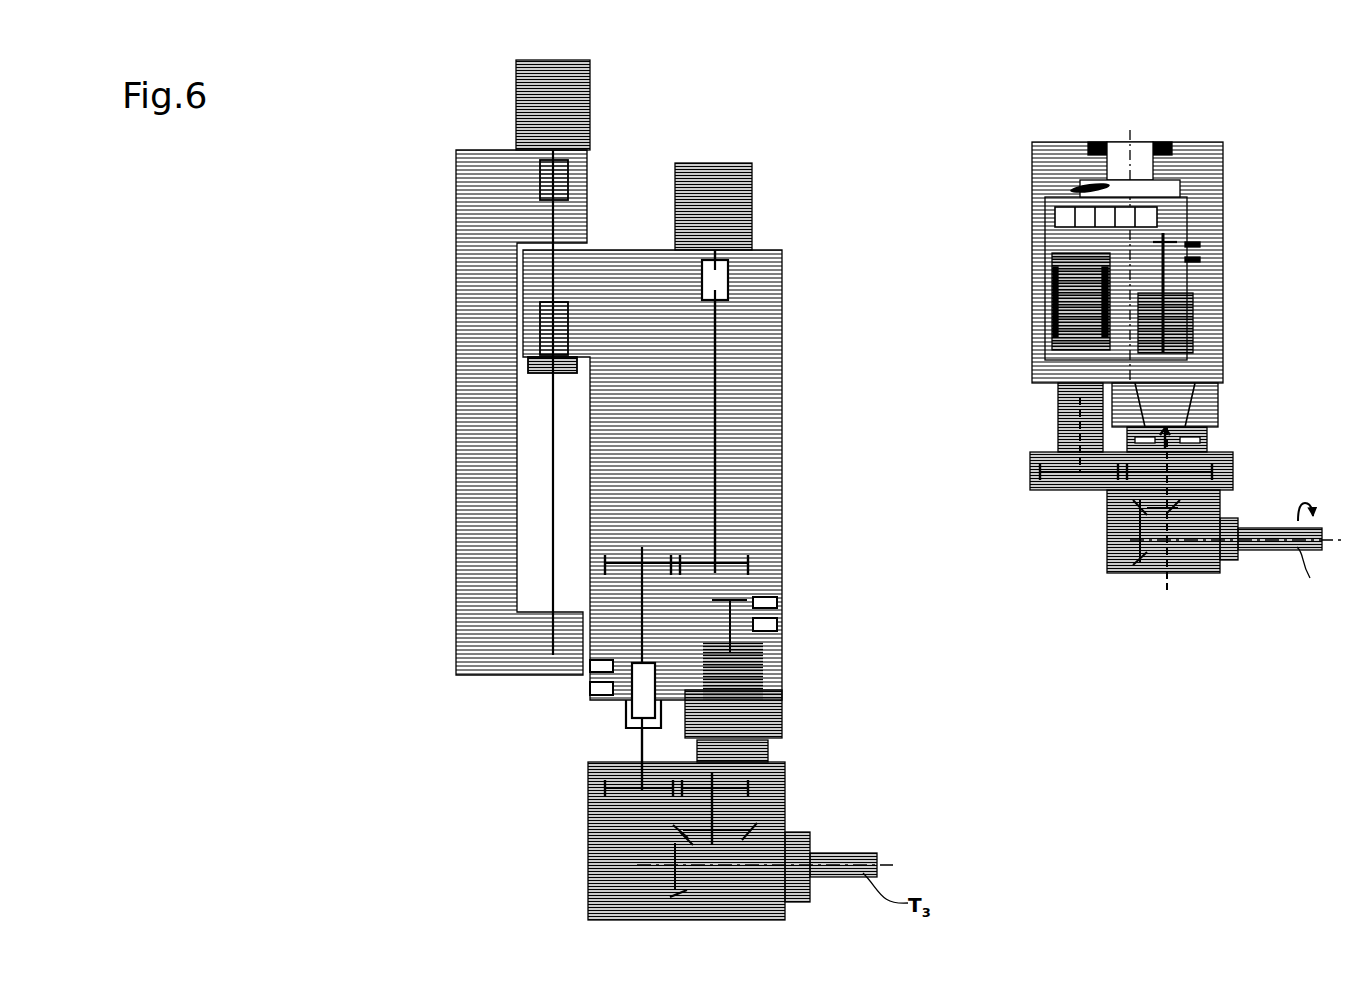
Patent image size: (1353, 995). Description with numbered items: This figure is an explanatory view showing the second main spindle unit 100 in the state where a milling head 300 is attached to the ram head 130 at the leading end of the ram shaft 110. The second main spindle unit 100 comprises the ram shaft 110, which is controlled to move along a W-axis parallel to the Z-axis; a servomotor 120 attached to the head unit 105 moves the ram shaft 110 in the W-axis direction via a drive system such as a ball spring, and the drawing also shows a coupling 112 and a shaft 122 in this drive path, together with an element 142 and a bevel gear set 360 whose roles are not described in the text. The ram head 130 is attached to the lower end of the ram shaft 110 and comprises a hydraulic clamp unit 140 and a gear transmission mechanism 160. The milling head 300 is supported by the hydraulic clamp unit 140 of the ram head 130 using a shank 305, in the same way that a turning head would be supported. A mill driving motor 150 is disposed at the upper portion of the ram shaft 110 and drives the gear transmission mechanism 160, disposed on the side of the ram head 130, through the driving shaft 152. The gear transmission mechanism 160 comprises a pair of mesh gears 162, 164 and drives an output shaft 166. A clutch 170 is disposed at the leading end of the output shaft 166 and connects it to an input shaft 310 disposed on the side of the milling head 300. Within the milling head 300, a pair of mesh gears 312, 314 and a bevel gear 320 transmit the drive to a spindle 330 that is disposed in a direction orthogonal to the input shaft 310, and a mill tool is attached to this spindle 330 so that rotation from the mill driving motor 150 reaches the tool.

The second main spindle unit 100 is at (842, 250).
The head unit 105 is at (483, 352).
The ram shaft 110 is at (768, 437).
The coupling 112 is at (548, 323).
The servomotor 120 is at (573, 107).
The first motor shaft 122 is at (552, 470).
The ram head 130 is at (797, 653).
The hydraulic clamp unit 140 is at (762, 722).
The actuator shaft 142 is at (1165, 301).
The mill driving motor 150 is at (733, 215).
The driving shaft 152 is at (717, 360).
The gear transmission mechanism 160 is at (746, 508).
The mesh gear 162 is at (730, 563).
The mesh gear 164 is at (1125, 210).
The output shaft 166 is at (642, 623).
The clutch 170 is at (627, 720).
The milling head 300 is at (773, 835).
The shank 305 is at (1178, 413).
The input shaft 310 is at (640, 743).
The mesh gear 312 is at (626, 792).
The mesh gear 314 is at (737, 787).
The bevel gear 320 is at (607, 856).
The spindle 330 is at (798, 887).
The bevel gear set 360 is at (1213, 520).